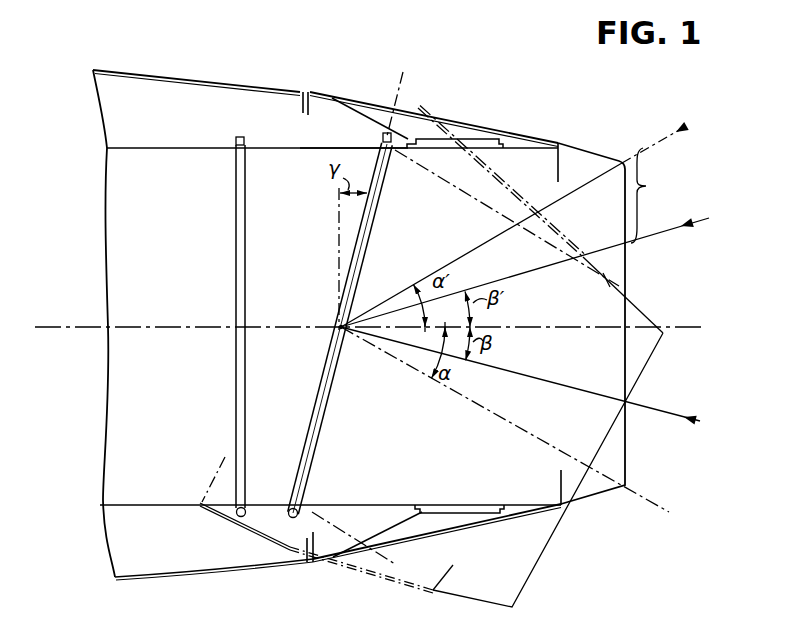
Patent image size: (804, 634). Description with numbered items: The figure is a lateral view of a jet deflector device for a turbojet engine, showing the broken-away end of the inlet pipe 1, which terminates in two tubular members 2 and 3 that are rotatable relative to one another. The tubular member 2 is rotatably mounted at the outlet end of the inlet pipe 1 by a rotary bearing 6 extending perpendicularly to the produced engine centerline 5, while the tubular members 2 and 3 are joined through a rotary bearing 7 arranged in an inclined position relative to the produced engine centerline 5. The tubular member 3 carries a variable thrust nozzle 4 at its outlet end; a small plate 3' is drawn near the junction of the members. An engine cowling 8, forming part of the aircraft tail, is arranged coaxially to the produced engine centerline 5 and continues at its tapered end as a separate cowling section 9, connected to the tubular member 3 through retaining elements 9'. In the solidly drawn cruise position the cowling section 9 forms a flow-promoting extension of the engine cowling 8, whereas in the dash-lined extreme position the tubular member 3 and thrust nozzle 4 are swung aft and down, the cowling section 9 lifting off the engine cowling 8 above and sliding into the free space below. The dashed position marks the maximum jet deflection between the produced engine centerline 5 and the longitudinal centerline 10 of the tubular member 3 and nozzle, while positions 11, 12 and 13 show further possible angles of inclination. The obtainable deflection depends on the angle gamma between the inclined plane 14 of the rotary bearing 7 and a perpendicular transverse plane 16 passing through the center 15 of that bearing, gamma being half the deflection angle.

The inlet pipe 1 is at (185, 147).
The tubular member 2 is at (298, 162).
The tubular member 3 is at (552, 306).
The forward plate 3' is at (455, 326).
The variable thrust nozzle 4 is at (589, 163).
The produced engine centerline 5 is at (77, 328).
The rotary bearing 6 is at (238, 134).
The rotary bearing 7 is at (381, 135).
The engine cowling 8 is at (172, 78).
The cowling section 9 is at (435, 351).
The retaining elements 9' is at (501, 169).
The longitudinal centerline 10 is at (633, 522).
The position 11 is at (536, 375).
The position 12 is at (538, 268).
The position 13 is at (535, 217).
The inclined plane 14 is at (393, 82).
The center 15 is at (340, 328).
The perpendicular transverse plane 16 is at (338, 259).